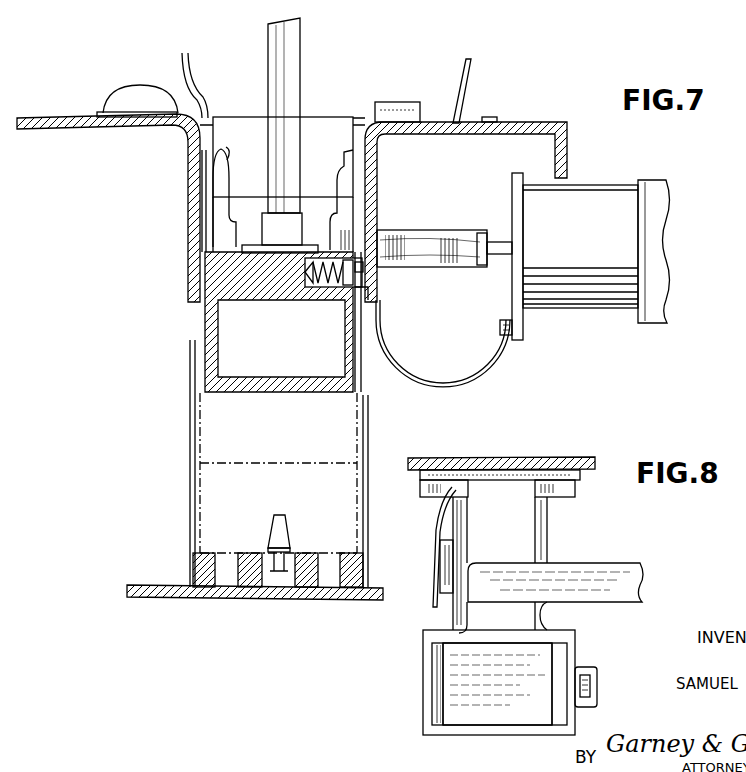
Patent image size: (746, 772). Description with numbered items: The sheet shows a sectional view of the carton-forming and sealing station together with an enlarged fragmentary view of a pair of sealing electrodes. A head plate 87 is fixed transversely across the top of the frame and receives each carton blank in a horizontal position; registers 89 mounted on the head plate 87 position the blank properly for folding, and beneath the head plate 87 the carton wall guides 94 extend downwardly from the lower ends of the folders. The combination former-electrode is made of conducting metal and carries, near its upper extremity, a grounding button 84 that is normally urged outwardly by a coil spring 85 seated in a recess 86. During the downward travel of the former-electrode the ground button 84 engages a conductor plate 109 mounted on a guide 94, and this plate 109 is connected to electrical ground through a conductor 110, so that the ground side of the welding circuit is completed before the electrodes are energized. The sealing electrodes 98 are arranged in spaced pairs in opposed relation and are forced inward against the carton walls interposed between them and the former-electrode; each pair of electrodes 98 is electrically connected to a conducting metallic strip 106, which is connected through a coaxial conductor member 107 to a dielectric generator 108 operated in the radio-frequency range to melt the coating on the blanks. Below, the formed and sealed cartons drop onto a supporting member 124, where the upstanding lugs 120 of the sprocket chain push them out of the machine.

In FIG. 7, the grounding button 84 is at (366, 290).
In FIG. 7, the coil spring 85 is at (320, 280).
In FIG. 7, the recess 86 is at (331, 283).
In FIG. 8, the head plate 87 is at (496, 458).
In FIG. 7, the registers 89 is at (467, 84).
In FIG. 7, the carton wall guides 94 is at (373, 198).
In FIG. 8, the electrodes 98 is at (567, 662).
In FIG. 7, the conducting metallic strip 106 is at (440, 240).
In FIG. 8, the conducting metallic strip 106 is at (598, 566).
In FIG. 7, the coaxial conductor member 107 is at (597, 290).
In FIG. 7, the dielectric generator 108 is at (668, 193).
In FIG. 7, the conductor plate 109 is at (370, 270).
In FIG. 7, the conductor 110 is at (443, 388).
In FIG. 7, the upstanding lugs 120 is at (284, 521).
In FIG. 7, the supporting member 124 is at (300, 592).